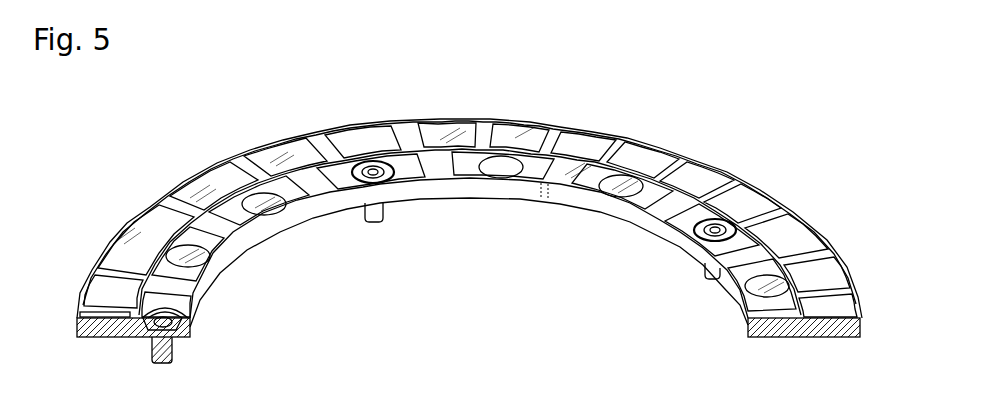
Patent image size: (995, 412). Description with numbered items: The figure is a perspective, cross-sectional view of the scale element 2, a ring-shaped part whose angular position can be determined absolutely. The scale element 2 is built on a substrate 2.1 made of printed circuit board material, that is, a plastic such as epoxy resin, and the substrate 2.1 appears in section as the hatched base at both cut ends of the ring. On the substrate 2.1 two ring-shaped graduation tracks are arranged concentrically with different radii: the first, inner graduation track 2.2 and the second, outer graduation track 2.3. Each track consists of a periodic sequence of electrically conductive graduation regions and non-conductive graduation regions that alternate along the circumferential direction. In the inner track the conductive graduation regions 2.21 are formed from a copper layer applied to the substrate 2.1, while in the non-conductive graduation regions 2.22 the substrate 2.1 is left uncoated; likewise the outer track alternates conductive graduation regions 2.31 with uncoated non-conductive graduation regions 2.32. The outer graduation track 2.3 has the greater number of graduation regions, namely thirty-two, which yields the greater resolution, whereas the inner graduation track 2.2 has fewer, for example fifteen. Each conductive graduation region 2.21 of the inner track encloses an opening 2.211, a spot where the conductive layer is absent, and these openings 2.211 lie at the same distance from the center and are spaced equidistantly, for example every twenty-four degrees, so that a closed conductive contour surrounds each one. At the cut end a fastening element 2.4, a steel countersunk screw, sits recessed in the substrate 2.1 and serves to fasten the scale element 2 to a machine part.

The scale element 2 is at (720, 157).
The substrate 2.1 is at (748, 327).
The first graduation track 2.2 is at (774, 301).
The second graduation track 2.3 is at (833, 300).
The fastening element 2.4 is at (172, 352).
The electrically conductive graduation region 2.21 is at (247, 222).
The opening 2.211 is at (621, 190).
The non-conductive graduation region 2.22 is at (325, 193).
The electrically conductive graduation region 2.31 is at (150, 217).
The non-conductive graduation region 2.32 is at (217, 177).